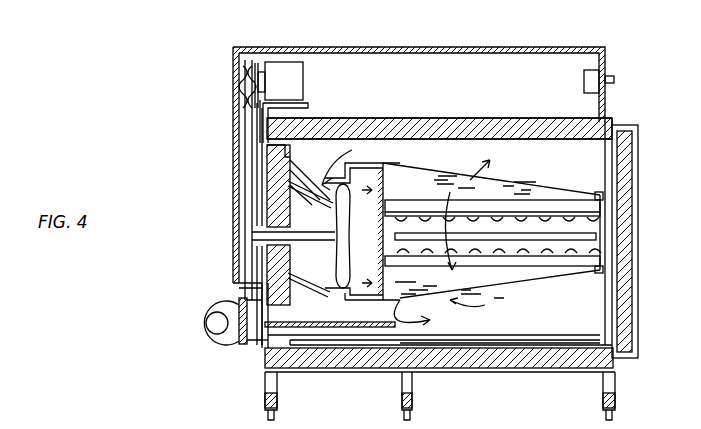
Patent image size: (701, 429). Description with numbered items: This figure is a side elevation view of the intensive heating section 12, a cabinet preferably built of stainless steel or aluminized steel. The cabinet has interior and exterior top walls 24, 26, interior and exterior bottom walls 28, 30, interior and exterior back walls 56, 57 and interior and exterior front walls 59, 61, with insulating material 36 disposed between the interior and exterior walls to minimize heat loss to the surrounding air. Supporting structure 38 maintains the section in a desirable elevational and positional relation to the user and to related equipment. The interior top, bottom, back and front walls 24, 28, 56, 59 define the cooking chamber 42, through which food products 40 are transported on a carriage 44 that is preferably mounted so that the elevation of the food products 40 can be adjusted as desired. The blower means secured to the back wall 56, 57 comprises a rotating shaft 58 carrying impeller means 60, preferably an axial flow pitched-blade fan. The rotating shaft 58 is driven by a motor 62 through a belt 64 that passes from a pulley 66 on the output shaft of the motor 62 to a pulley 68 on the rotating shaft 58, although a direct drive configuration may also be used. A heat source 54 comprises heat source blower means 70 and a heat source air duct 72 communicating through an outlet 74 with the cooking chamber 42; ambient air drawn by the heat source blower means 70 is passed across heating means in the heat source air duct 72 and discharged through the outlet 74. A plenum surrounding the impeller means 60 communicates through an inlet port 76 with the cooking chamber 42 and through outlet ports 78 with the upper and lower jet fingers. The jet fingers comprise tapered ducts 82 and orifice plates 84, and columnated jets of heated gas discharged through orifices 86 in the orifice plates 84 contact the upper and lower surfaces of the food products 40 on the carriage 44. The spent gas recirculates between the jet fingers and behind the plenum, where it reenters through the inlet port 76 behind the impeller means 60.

The intensive heating section 12 is at (192, 110).
The interior top wall 24 is at (522, 134).
The exterior top wall 26 is at (457, 118).
The interior bottom wall 28 is at (605, 345).
The exterior bottom wall 30 is at (507, 372).
The insulating material 36 is at (545, 116).
The supporting structure 38 is at (375, 374).
The food products 40 is at (528, 246).
The cooking chamber 42 is at (588, 140).
The carriage 44 is at (597, 244).
The heat source 54 is at (224, 346).
The interior back wall 56 is at (285, 185).
The exterior back wall 57 is at (275, 160).
The rotating shaft 58 is at (262, 266).
The interior front wall 59 is at (630, 150).
The impeller means 60 is at (380, 172).
The exterior front wall 61 is at (634, 190).
The motor 62 is at (292, 72).
The belt 64 is at (235, 112).
The pulley 66 is at (256, 105).
The pulley 68 is at (255, 236).
The heat source blower means 70 is at (197, 318).
The heat source air duct 72 is at (238, 299).
The outlet 74 is at (420, 330).
The inlet port 76 is at (315, 187).
The outlet ports 78 is at (386, 190).
The tapered ducts 82 is at (482, 187).
The orifice plates 84 is at (598, 230).
The orifices 86 is at (550, 204).